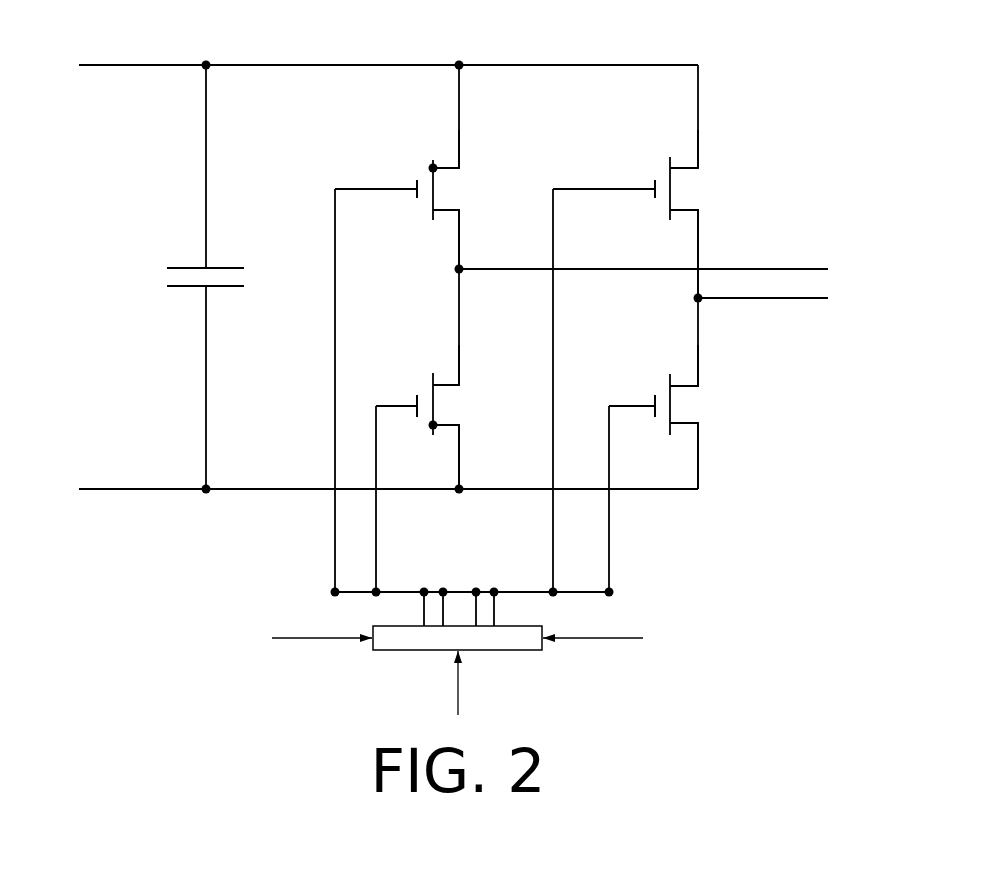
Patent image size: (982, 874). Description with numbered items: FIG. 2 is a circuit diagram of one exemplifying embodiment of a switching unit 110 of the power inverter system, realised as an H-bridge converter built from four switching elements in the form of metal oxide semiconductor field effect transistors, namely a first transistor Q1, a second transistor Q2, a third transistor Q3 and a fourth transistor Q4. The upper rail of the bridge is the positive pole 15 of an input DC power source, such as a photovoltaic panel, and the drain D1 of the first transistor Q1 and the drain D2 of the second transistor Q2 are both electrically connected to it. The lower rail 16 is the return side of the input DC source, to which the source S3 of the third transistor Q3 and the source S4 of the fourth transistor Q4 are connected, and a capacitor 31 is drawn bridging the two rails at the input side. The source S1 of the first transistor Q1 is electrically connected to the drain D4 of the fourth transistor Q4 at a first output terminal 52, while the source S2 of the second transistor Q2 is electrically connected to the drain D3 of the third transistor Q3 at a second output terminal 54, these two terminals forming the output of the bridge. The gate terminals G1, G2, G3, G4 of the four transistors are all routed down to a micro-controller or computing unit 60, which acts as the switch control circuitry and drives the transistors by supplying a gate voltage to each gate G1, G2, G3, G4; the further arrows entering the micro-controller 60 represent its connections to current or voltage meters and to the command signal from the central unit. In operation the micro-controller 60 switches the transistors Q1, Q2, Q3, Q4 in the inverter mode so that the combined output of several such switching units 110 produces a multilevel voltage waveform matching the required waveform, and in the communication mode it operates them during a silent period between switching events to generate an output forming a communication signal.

The positive pole 15 is at (128, 67).
The negative DC bus line 16 is at (99, 489).
The DC link capacitor 31 is at (185, 288).
The first output terminal 52 is at (793, 268).
The second output terminal 54 is at (787, 302).
The micro-controller 60 is at (423, 650).
The switching unit 110 is at (770, 58).
The first transistor Q1 is at (497, 152).
The second transistor Q2 is at (733, 158).
The third transistor Q3 is at (737, 389).
The fourth transistor Q4 is at (478, 390).
The drain of the first transistor D1 is at (439, 139).
The gate terminal of the first transistor G1 is at (398, 174).
The source of the first transistor S1 is at (439, 239).
The drain of the second transistor D2 is at (679, 139).
The gate terminal of the second transistor G2 is at (637, 174).
The source of the second transistor S2 is at (677, 254).
The drain of the third transistor D3 is at (678, 355).
The gate terminal of the third transistor G3 is at (637, 391).
The source of the third transistor S3 is at (678, 456).
The drain of the fourth transistor D4 is at (439, 355).
The gate terminal of the fourth transistor G4 is at (398, 394).
The source of the fourth transistor S4 is at (439, 457).